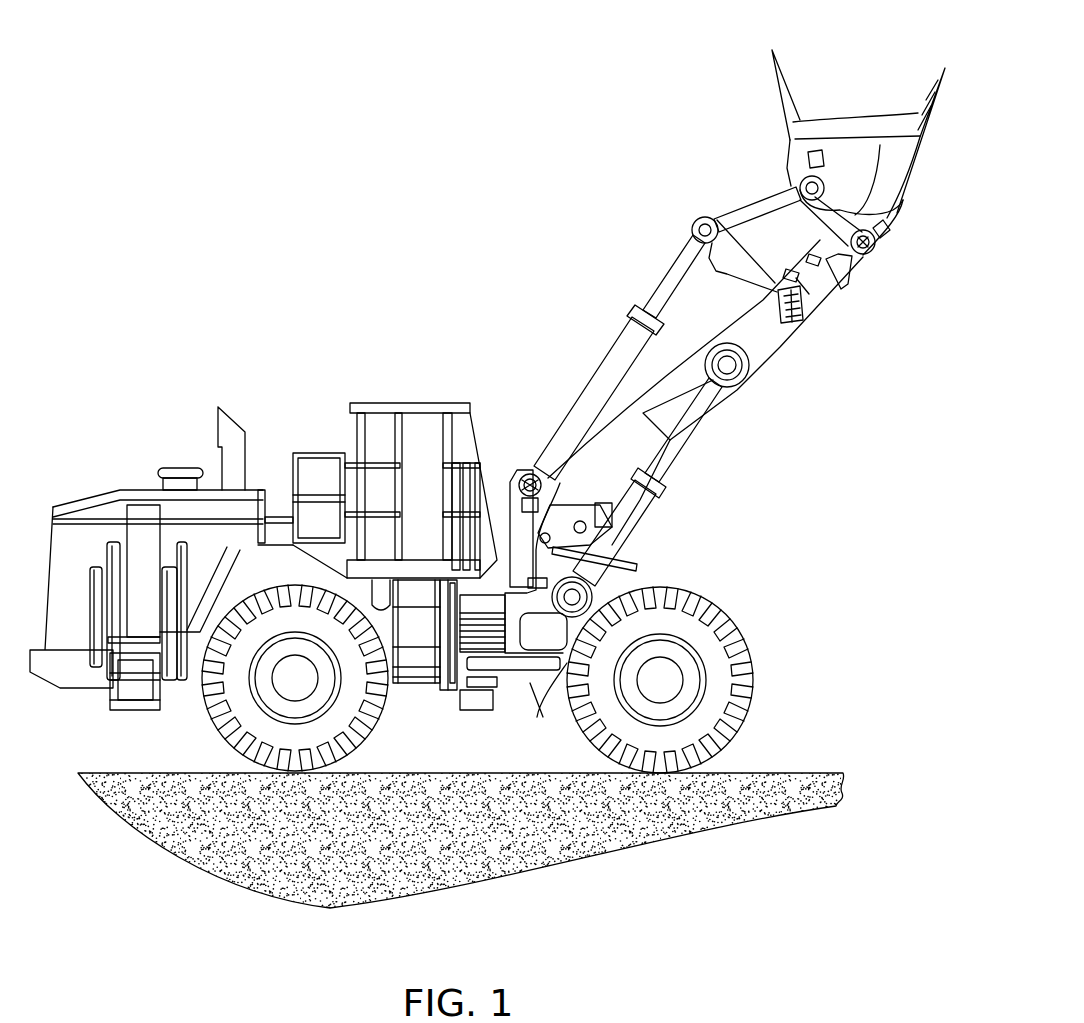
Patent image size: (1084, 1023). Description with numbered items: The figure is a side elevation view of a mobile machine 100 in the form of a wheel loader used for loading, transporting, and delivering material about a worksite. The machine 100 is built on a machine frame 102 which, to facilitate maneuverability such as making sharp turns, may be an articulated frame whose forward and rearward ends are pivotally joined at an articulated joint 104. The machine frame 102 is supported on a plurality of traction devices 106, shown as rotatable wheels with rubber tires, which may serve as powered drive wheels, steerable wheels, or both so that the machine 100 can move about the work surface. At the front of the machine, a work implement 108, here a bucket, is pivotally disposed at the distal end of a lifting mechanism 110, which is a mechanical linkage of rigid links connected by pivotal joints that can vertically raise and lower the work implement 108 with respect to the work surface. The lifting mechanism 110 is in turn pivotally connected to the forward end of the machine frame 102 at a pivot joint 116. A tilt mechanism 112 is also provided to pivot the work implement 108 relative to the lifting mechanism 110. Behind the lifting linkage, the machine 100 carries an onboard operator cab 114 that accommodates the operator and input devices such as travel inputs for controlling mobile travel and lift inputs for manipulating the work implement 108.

The mobile machine 100 is at (614, 130).
The machine frame 102 is at (528, 692).
The articulated joint 104 is at (478, 727).
The traction devices 106 is at (383, 695).
The work implement 108 is at (858, 128).
The lifting mechanism 110 is at (752, 346).
The tilt mechanism 112 is at (654, 258).
The operator cab 114 is at (422, 402).
The pivot joint 116 is at (590, 527).